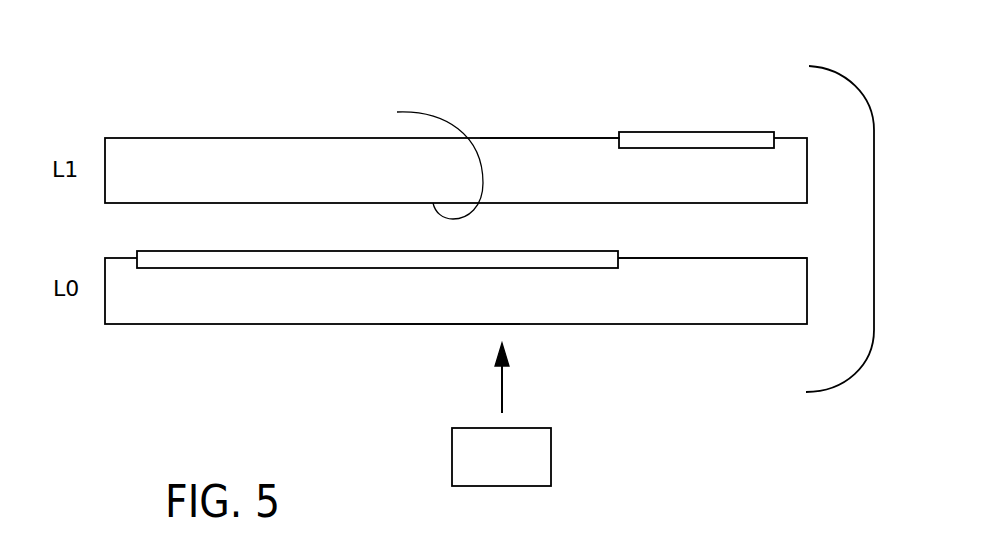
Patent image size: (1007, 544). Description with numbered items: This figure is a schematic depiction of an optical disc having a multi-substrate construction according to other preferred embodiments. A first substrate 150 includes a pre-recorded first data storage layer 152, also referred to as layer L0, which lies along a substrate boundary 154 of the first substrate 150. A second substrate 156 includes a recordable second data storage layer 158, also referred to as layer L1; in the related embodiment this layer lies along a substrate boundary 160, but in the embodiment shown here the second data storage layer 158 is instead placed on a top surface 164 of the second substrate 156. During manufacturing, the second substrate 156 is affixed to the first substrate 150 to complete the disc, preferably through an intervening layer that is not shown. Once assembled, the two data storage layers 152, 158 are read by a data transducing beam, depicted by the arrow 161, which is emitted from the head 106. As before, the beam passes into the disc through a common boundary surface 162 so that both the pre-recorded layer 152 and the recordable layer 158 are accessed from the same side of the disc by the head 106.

The head 106 is at (551, 457).
The first substrate 150 is at (297, 324).
The first data storage layer 152 is at (453, 260).
The substrate boundary 154 is at (697, 258).
The second substrate 156 is at (135, 152).
The second data storage layer 158 is at (728, 130).
The substrate boundary 160 is at (422, 159).
The data transducing beam 161 is at (502, 382).
The common boundary surface 162 is at (455, 324).
The top surface 164 is at (535, 138).